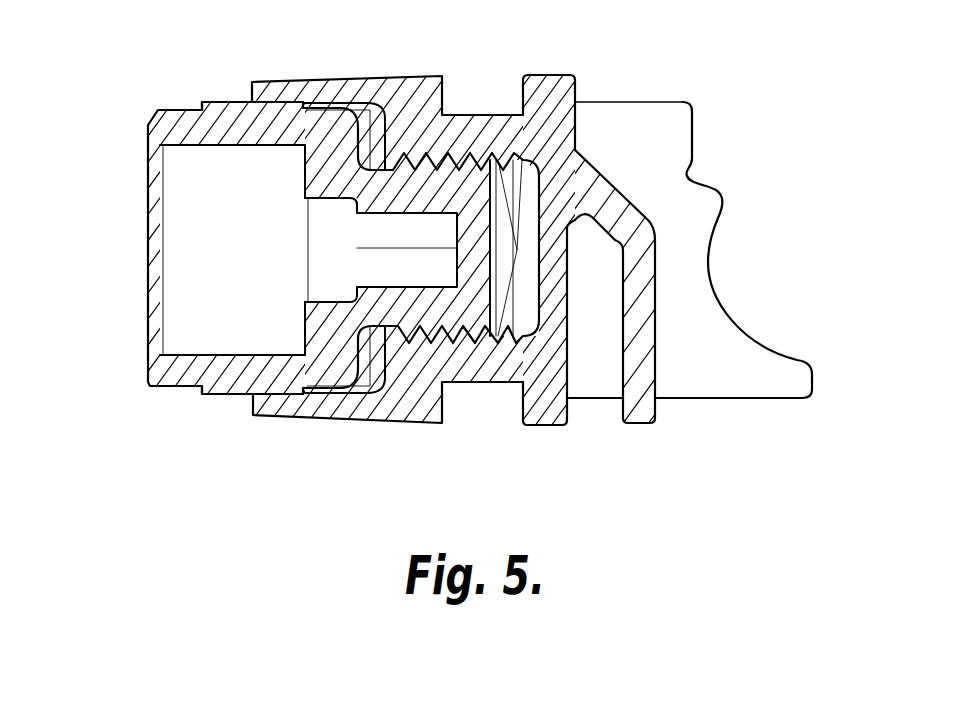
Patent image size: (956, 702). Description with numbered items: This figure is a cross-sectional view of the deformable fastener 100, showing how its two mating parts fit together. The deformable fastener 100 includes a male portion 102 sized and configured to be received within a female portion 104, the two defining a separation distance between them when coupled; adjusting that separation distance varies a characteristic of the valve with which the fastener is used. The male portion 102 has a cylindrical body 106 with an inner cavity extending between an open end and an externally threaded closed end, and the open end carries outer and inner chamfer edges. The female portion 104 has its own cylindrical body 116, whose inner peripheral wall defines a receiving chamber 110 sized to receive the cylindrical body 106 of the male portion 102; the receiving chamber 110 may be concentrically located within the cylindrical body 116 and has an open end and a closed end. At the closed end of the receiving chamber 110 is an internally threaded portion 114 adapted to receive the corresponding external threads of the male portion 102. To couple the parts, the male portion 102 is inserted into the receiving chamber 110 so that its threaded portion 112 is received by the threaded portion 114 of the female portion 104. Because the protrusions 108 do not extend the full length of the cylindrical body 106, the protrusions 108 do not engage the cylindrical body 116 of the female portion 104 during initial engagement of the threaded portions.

The deformable fastener 100 is at (683, 457).
The male portion 102 is at (148, 389).
The female portion 104 is at (560, 427).
The cylindrical body 106 is at (332, 372).
The protrusions 108 is at (208, 102).
The receiving chamber 110 is at (305, 380).
The threaded portion 112 is at (420, 340).
The internally threaded portion 114 is at (462, 343).
The cylindrical body 116 is at (302, 392).